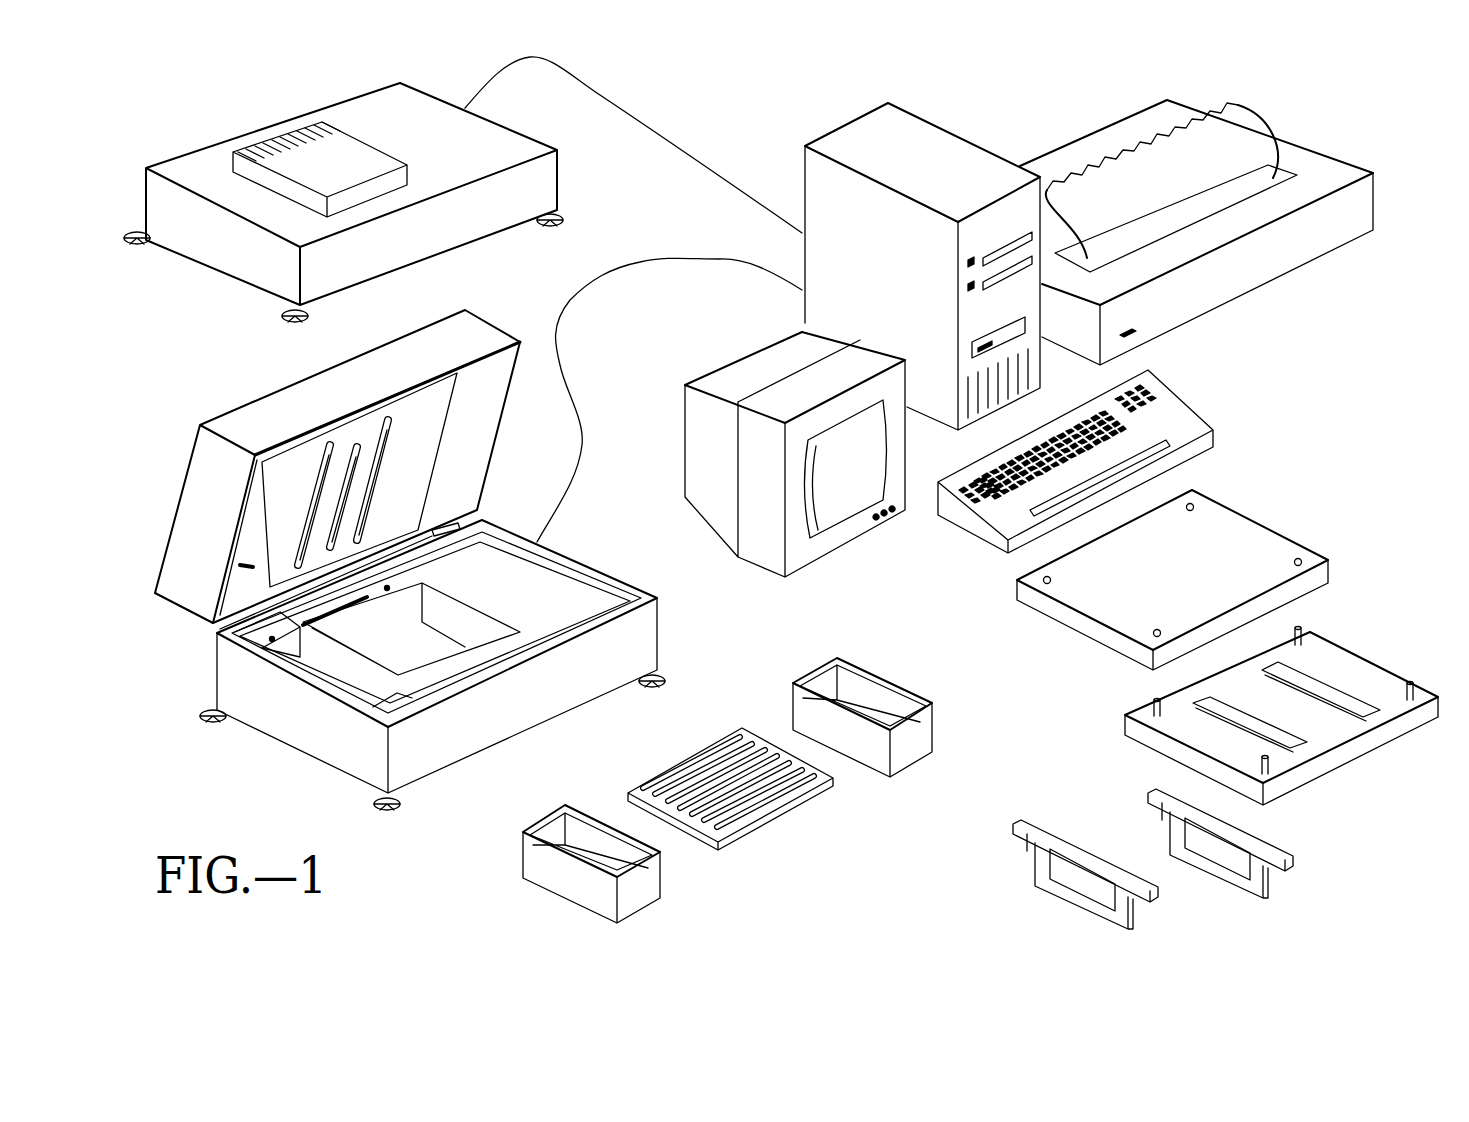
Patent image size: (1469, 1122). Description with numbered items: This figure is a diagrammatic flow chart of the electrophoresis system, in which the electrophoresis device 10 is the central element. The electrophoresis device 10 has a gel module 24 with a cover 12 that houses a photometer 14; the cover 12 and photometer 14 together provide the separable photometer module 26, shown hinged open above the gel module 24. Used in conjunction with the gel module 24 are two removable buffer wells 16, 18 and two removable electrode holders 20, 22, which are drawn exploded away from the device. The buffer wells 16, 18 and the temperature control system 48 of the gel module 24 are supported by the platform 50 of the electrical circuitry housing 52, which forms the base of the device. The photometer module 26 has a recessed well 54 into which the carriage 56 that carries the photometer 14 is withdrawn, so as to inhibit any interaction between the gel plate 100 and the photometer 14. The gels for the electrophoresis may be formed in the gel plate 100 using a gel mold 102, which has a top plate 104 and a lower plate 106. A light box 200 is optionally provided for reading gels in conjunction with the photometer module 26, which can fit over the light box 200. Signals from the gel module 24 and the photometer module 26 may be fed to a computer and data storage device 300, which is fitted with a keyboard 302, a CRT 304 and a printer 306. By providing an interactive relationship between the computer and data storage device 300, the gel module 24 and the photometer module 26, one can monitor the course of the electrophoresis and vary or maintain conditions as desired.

The electrophoresis device 10 is at (483, 668).
The cover 12 is at (207, 477).
The photometer 14 is at (362, 430).
The buffer well 16 is at (558, 875).
The buffer well 18 is at (863, 738).
The electrode holder 20 is at (1040, 873).
The electrode holder 22 is at (1175, 840).
The gel module 24 is at (537, 683).
The photometer module 26 is at (334, 469).
The temperature control system 48 is at (373, 643).
The platform 50 is at (526, 594).
The electrical circuitry housing 52 is at (323, 728).
The recessed well 54 is at (458, 452).
The carriage 56 is at (277, 505).
The gel plate 100 is at (677, 780).
The gel mold 102 is at (1227, 630).
The top plate 104 is at (1250, 550).
The lower plate 106 is at (1368, 678).
The light box 200 is at (238, 258).
The computer and data storage device 300 is at (907, 147).
The keyboard 302 is at (1158, 400).
The CRT 304 is at (798, 545).
The printer 306 is at (1163, 118).